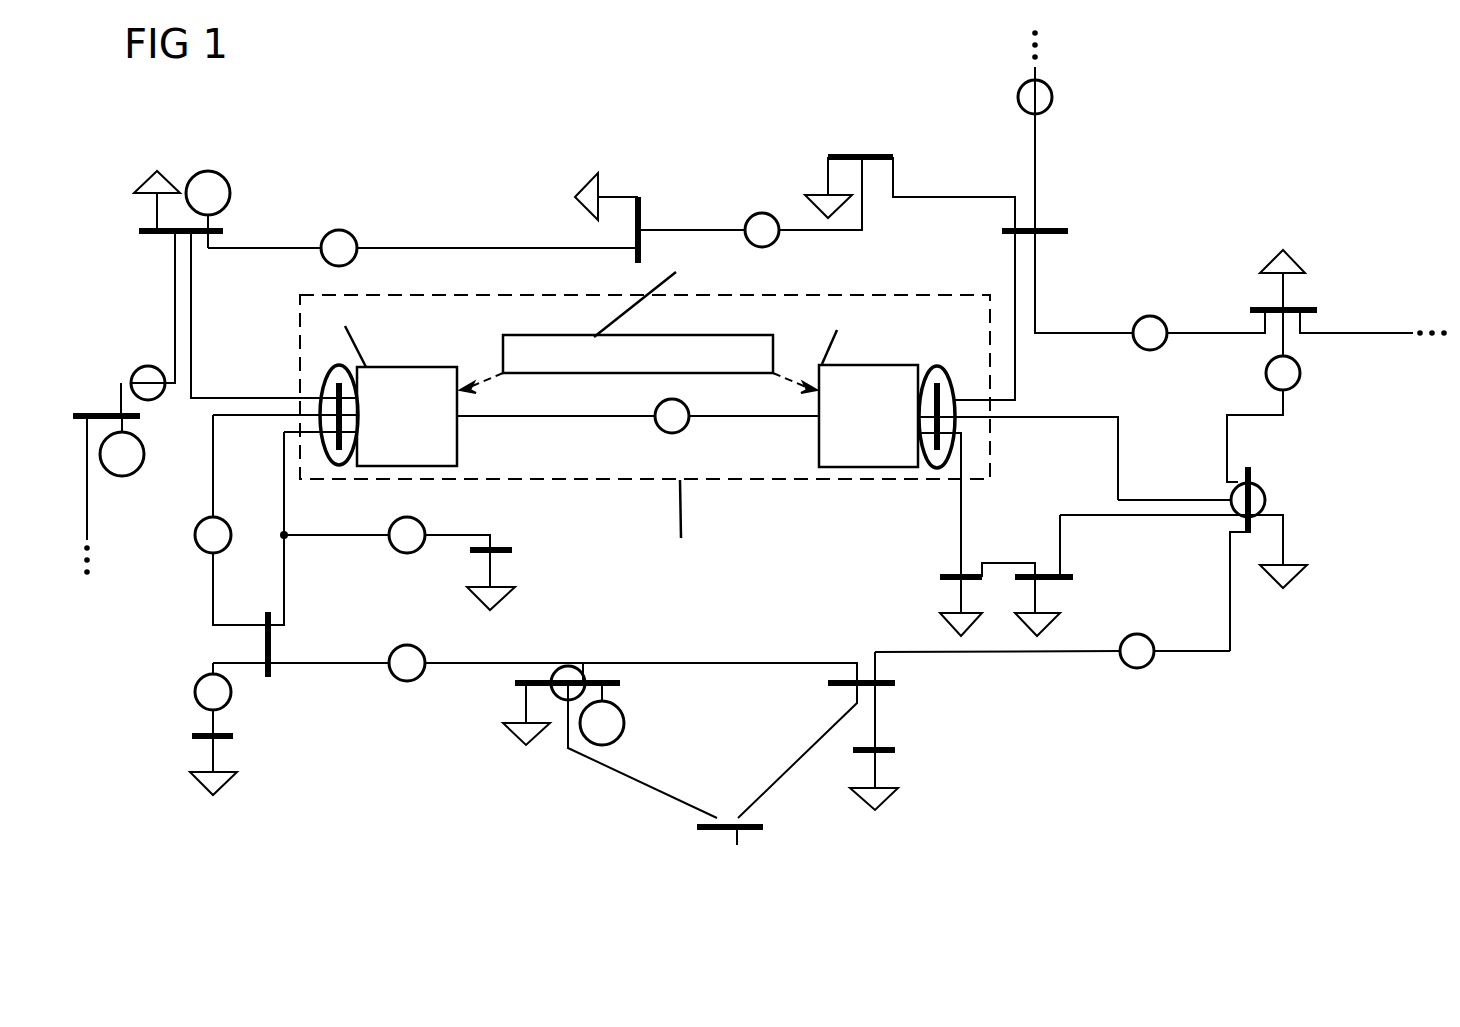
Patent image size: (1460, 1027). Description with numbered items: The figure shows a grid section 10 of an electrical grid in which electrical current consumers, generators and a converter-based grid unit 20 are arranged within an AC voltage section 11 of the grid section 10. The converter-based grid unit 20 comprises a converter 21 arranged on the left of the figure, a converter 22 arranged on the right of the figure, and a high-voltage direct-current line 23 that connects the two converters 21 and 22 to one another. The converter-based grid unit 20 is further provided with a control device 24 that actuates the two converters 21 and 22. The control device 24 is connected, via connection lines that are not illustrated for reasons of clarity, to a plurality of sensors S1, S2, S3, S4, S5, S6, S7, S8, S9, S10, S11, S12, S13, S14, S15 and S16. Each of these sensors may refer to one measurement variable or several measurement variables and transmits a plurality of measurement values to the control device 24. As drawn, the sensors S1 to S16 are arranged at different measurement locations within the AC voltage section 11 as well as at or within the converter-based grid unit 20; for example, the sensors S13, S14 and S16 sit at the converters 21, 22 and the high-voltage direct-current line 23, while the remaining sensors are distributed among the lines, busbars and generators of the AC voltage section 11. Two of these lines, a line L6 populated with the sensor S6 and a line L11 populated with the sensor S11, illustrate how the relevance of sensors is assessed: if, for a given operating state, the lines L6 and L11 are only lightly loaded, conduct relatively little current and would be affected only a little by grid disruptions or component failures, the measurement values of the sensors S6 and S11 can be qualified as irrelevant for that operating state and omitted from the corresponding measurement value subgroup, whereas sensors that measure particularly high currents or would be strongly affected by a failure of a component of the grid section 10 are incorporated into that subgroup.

The grid section 10 is at (1205, 137).
The AC voltage section 11 is at (398, 210).
The converter-based grid unit 20 is at (610, 482).
The converter 21 is at (394, 384).
The converter 22 is at (876, 386).
The high-voltage direct-current line 23 is at (520, 418).
The control device 24 is at (645, 322).
The sensor S1 is at (152, 366).
The sensor S2 is at (339, 230).
The sensor S3 is at (195, 535).
The sensor S4 is at (195, 692).
The sensor S5 is at (395, 522).
The sensor S6 is at (395, 652).
The sensor S7 is at (560, 667).
The sensor S8 is at (1152, 316).
The sensor S9 is at (1266, 500).
The sensor S10 is at (1301, 373).
The sensor S11 is at (1133, 634).
The sensor S12 is at (762, 213).
The sensor S13 is at (322, 385).
The sensor S14 is at (957, 385).
The sensor S15 is at (1052, 97).
The sensor S16 is at (686, 428).
The line L6 is at (455, 668).
The line L11 is at (1005, 657).